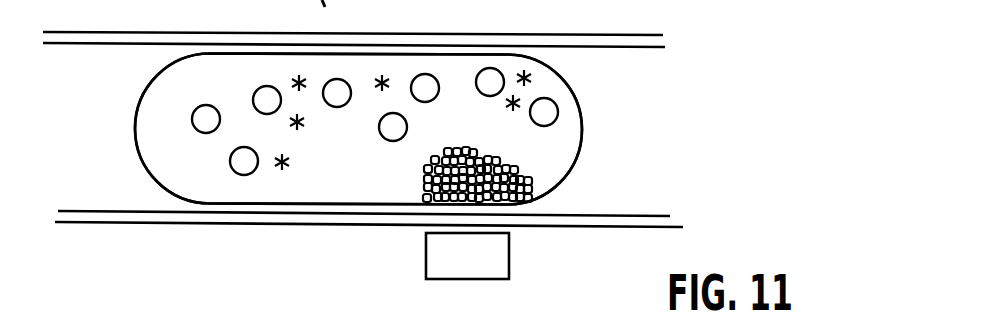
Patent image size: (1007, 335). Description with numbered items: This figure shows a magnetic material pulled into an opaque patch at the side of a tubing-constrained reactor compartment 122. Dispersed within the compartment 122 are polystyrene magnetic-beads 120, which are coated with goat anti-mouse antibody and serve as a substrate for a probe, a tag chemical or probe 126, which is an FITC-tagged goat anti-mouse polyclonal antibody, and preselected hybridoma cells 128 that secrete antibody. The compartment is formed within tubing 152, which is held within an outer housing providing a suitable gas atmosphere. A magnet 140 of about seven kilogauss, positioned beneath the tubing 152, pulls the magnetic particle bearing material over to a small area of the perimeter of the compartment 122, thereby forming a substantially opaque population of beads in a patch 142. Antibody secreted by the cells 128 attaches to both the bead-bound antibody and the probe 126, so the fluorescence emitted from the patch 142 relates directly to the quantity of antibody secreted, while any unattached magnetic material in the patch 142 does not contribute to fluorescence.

The polystyrene magnetic-beads 120 is at (178, 158).
The reactor compartment 122 is at (575, 98).
The tag chemical (probe) 126 is at (283, 168).
The hybridoma cells 128 is at (425, 82).
The magnet 140 is at (471, 268).
The patch 142 is at (423, 183).
The tubing 152 is at (668, 221).